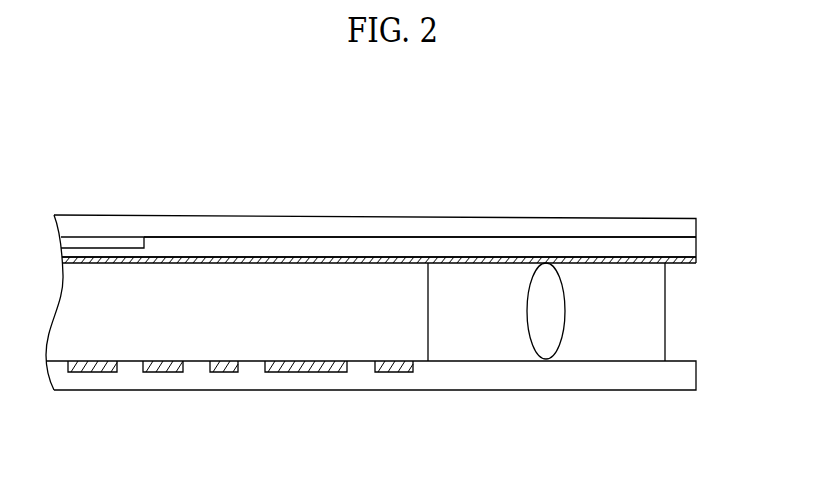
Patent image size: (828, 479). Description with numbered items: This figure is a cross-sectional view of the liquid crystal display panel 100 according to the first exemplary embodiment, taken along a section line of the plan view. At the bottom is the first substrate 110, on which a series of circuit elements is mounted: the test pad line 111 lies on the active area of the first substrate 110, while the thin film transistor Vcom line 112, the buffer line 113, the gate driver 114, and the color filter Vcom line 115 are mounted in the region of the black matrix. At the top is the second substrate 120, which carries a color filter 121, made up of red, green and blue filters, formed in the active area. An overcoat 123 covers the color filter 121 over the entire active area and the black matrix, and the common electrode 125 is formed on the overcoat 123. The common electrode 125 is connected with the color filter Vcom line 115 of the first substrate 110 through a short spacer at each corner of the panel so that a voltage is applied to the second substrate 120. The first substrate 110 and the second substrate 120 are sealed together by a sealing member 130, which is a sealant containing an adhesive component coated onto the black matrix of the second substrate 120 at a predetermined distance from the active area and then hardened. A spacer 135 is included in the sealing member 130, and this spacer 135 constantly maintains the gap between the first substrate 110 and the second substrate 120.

The liquid crystal display panel 100 is at (378, 121).
The first substrate 110 is at (500, 375).
The test pad line 111 is at (91, 372).
The thin film transistor Vcom line 112 is at (163, 372).
The buffer line 113 is at (222, 372).
The gate driver 114 is at (300, 372).
The color filter Vcom line 115 is at (390, 372).
The second substrate 120 is at (466, 228).
The color filter 121 is at (106, 245).
The overcoat 123 is at (225, 245).
The common electrode 125 is at (346, 257).
The sealing member 130 is at (650, 313).
The spacer 135 is at (553, 336).